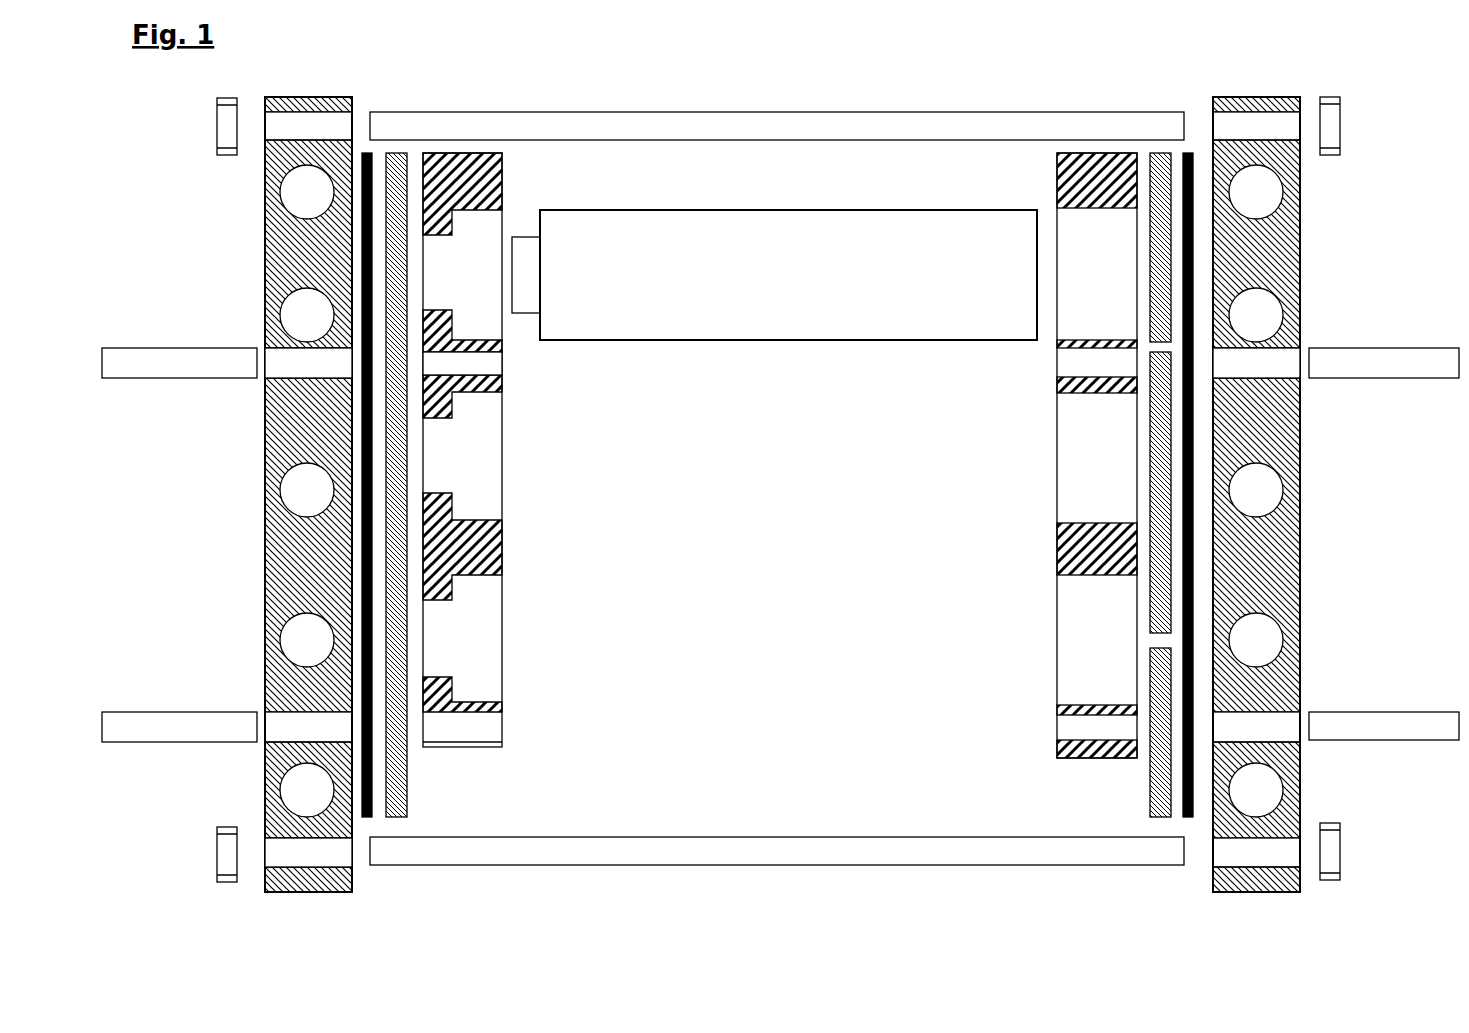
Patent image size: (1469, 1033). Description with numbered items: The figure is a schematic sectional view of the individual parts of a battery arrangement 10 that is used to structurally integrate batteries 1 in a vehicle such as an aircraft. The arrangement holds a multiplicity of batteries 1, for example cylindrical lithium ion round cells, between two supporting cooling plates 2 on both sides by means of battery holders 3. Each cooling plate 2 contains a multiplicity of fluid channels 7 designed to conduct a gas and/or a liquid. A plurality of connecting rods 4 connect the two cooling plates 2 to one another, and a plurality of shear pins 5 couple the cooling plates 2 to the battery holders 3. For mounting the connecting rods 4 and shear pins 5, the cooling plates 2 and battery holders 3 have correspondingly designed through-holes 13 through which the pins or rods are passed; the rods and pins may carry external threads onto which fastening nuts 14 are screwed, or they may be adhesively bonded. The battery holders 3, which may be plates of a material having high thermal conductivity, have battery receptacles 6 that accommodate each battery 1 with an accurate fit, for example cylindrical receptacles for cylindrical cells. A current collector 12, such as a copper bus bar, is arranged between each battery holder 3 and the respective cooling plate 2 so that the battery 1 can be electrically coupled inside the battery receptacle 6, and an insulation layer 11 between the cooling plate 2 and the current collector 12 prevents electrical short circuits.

The battery arrangement 10 is at (318, 46).
The battery 1 is at (727, 209).
The cooling plate 2 is at (265, 250).
The battery holder 3 is at (502, 550).
The connecting rod 4 is at (650, 111).
The shear pin 5 is at (160, 347).
The battery receptacle 6 is at (492, 435).
The fluid channel 7 is at (781, 491).
The insulation layer 11 is at (375, 775).
The current collector 12 is at (392, 152).
The through-hole 13 is at (502, 362).
The fastening nut 14 is at (215, 140).